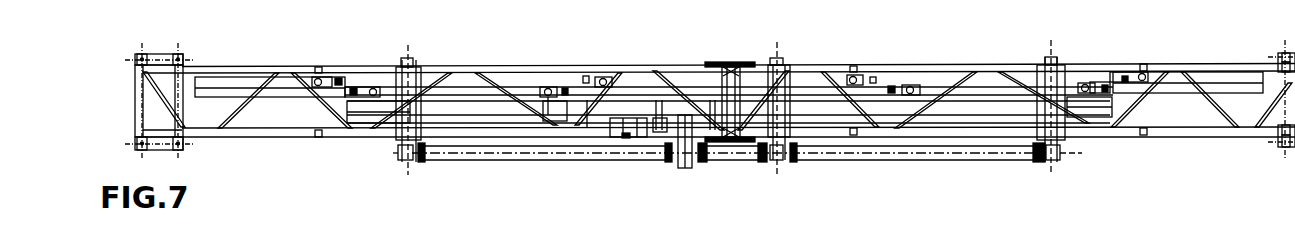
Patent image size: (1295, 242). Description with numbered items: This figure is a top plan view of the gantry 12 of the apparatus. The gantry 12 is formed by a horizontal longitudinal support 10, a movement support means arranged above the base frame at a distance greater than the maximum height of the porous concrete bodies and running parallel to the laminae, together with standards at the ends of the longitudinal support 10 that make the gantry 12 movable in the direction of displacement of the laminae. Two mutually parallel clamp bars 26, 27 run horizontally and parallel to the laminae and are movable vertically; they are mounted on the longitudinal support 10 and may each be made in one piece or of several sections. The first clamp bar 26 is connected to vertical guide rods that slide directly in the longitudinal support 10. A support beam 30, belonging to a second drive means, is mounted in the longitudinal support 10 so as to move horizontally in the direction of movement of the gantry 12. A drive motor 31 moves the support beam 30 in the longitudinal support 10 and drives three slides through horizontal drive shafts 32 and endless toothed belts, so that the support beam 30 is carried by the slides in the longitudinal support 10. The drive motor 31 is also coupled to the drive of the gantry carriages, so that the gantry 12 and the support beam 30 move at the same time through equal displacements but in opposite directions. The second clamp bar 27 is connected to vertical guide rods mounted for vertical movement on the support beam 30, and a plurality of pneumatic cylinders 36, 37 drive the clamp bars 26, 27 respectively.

The longitudinal support 10 is at (332, 143).
The gantry 12 is at (134, 114).
The clamp bar 26 is at (228, 82).
The clamp bar 27 is at (283, 93).
The support beam 30 is at (510, 128).
The drive motor 31 is at (617, 139).
The horizontal drive shafts 32 is at (455, 160).
The pneumatic cylinder 36 is at (338, 78).
The pneumatic cylinder 37 is at (357, 90).